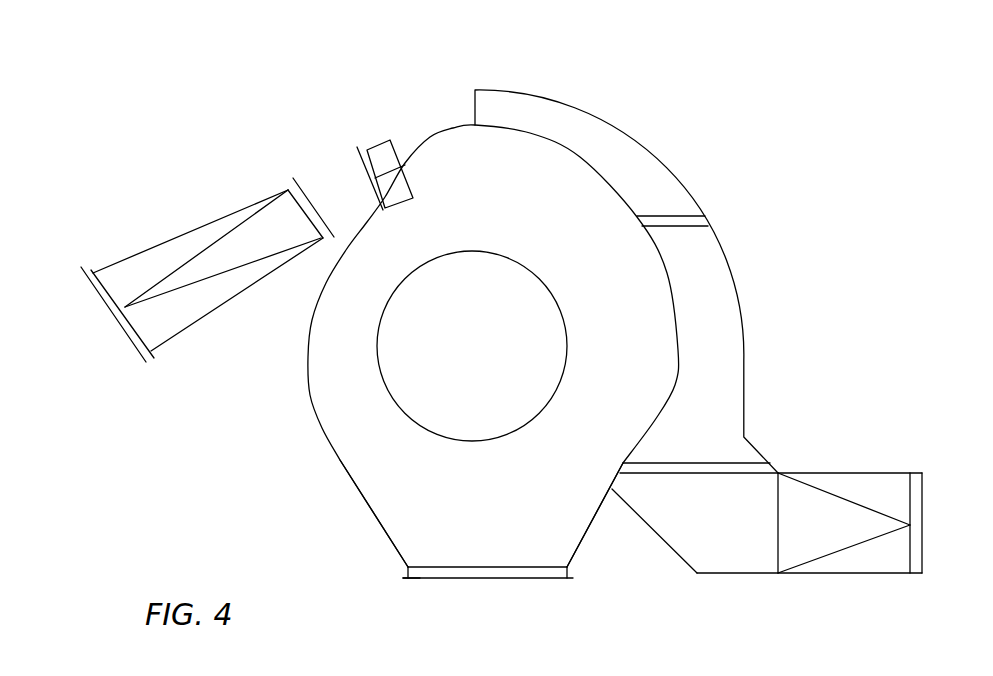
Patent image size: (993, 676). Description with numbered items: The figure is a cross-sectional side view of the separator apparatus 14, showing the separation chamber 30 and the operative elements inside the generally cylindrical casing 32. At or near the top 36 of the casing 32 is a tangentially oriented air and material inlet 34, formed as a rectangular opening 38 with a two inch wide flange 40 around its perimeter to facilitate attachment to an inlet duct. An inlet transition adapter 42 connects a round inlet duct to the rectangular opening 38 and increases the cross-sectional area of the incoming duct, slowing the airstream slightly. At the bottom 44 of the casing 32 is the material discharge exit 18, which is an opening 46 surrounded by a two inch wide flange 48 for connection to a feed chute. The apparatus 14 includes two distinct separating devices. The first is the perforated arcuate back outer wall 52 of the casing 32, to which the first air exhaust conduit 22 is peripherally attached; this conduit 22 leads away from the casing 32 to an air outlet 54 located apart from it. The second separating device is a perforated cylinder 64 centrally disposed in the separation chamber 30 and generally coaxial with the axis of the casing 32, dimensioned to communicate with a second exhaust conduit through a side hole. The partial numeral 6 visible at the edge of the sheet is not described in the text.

The separator apparatus 14 is at (178, 143).
The material discharge exit 18 is at (450, 573).
The first air exhaust conduit 22 is at (553, 117).
The separation chamber 30 is at (551, 204).
The cylindrical casing 32 is at (337, 462).
The air and material inlet 34 is at (405, 165).
The top 36 is at (438, 127).
The rectangular opening 38 is at (363, 182).
The flange 40 is at (360, 150).
The inlet transition adapter 42 is at (185, 305).
The bottom 44 is at (580, 563).
The opening 46 is at (537, 592).
The flange 48 is at (405, 577).
The perforated back outer wall 52 is at (665, 273).
The air outlet 54 is at (923, 523).
The perforated cylinder 64 is at (530, 423).
The partial numeral 6 is at (986, 333).